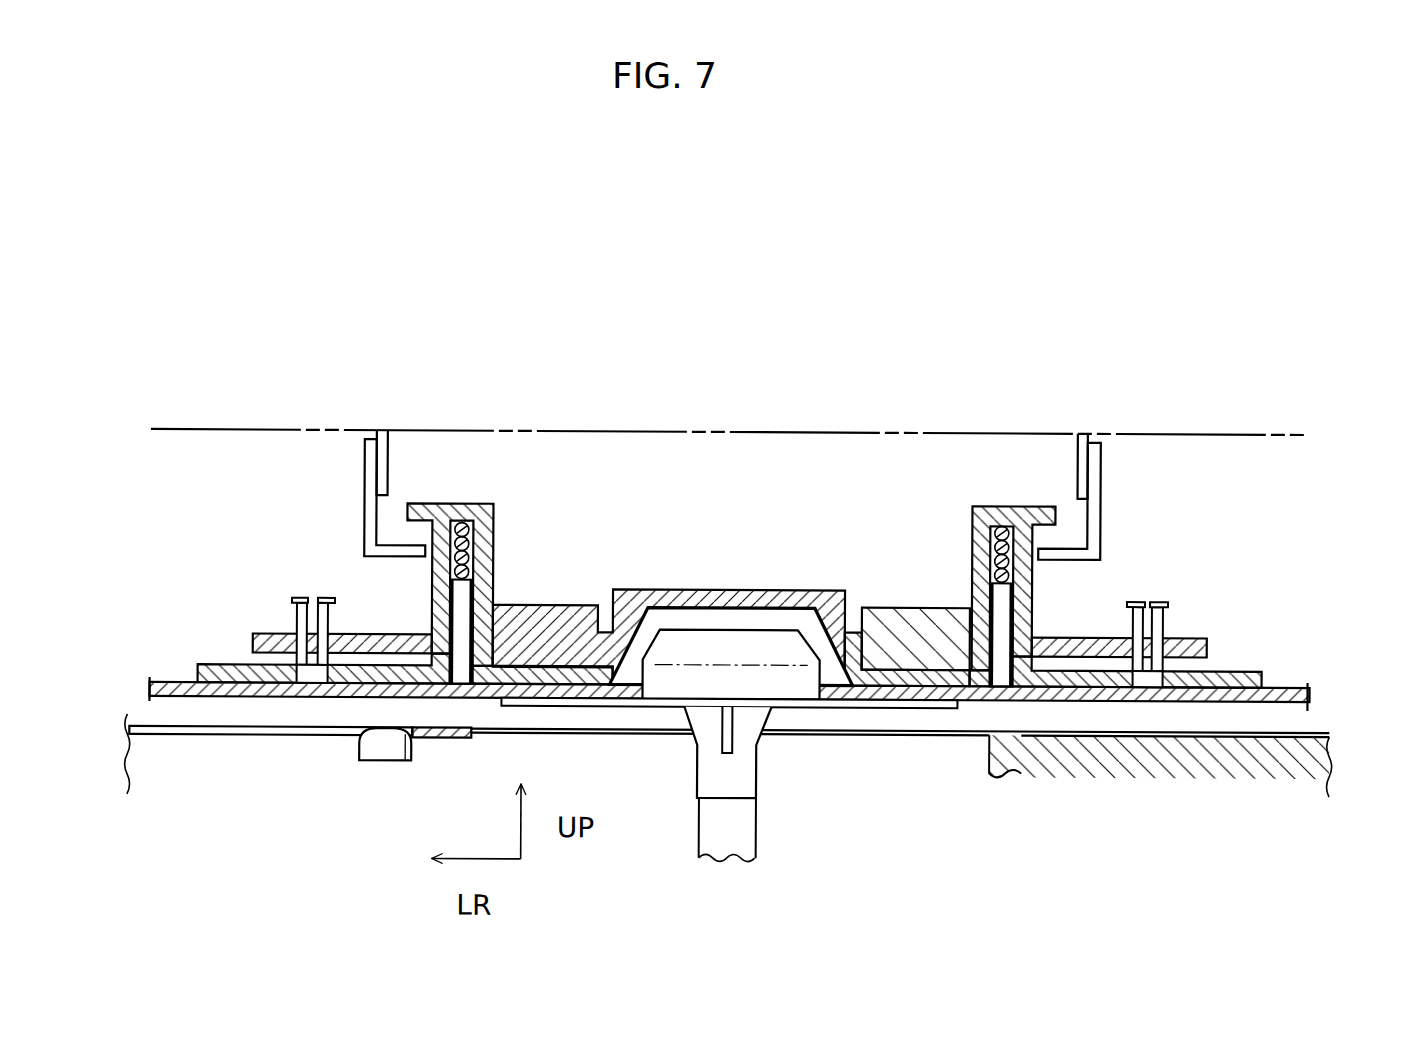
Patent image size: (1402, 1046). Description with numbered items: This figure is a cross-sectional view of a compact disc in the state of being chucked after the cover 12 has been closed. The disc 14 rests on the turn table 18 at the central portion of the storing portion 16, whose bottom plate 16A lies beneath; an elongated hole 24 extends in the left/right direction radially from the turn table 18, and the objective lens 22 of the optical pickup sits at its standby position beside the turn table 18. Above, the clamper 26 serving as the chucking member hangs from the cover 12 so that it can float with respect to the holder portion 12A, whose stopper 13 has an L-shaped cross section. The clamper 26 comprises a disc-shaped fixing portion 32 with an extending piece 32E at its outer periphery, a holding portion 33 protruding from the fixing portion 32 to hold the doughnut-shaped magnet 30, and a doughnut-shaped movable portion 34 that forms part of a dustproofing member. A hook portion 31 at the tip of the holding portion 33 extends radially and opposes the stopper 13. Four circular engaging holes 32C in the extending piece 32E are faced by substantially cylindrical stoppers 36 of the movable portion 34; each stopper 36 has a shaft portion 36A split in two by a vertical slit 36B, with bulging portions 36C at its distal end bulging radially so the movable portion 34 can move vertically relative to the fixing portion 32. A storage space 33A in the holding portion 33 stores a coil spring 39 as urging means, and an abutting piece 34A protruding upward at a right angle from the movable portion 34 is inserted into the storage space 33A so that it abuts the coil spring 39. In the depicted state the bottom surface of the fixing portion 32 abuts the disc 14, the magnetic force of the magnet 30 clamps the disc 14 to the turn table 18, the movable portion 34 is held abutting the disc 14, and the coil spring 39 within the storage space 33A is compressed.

The cover 12 is at (1233, 440).
The holder portion 12A is at (1095, 480).
The stopper 13 is at (1086, 563).
The disc 14 is at (1294, 691).
The storing portion 16 is at (1268, 546).
The bottom plate 16A is at (1308, 733).
The turn table 18 is at (853, 705).
The objective lens 22 is at (360, 752).
The elongated hole 24 is at (206, 737).
The clamper 26 is at (585, 548).
The magnet 30 is at (887, 613).
The hook portion 31 is at (1040, 514).
The fixing portion 32 is at (1210, 648).
The engaging holes 32C is at (302, 640).
The extending piece 32E is at (1055, 647).
The holding portion 33 is at (1030, 562).
The storage space 33A is at (473, 548).
The movable portion 34 is at (1263, 672).
The abutting piece 34A is at (1000, 600).
The stoppers 36 is at (335, 613).
The shaft portion 36A is at (320, 676).
The slit 36B is at (310, 628).
The bulging portions 36C is at (320, 597).
The coil spring 39 is at (995, 536).